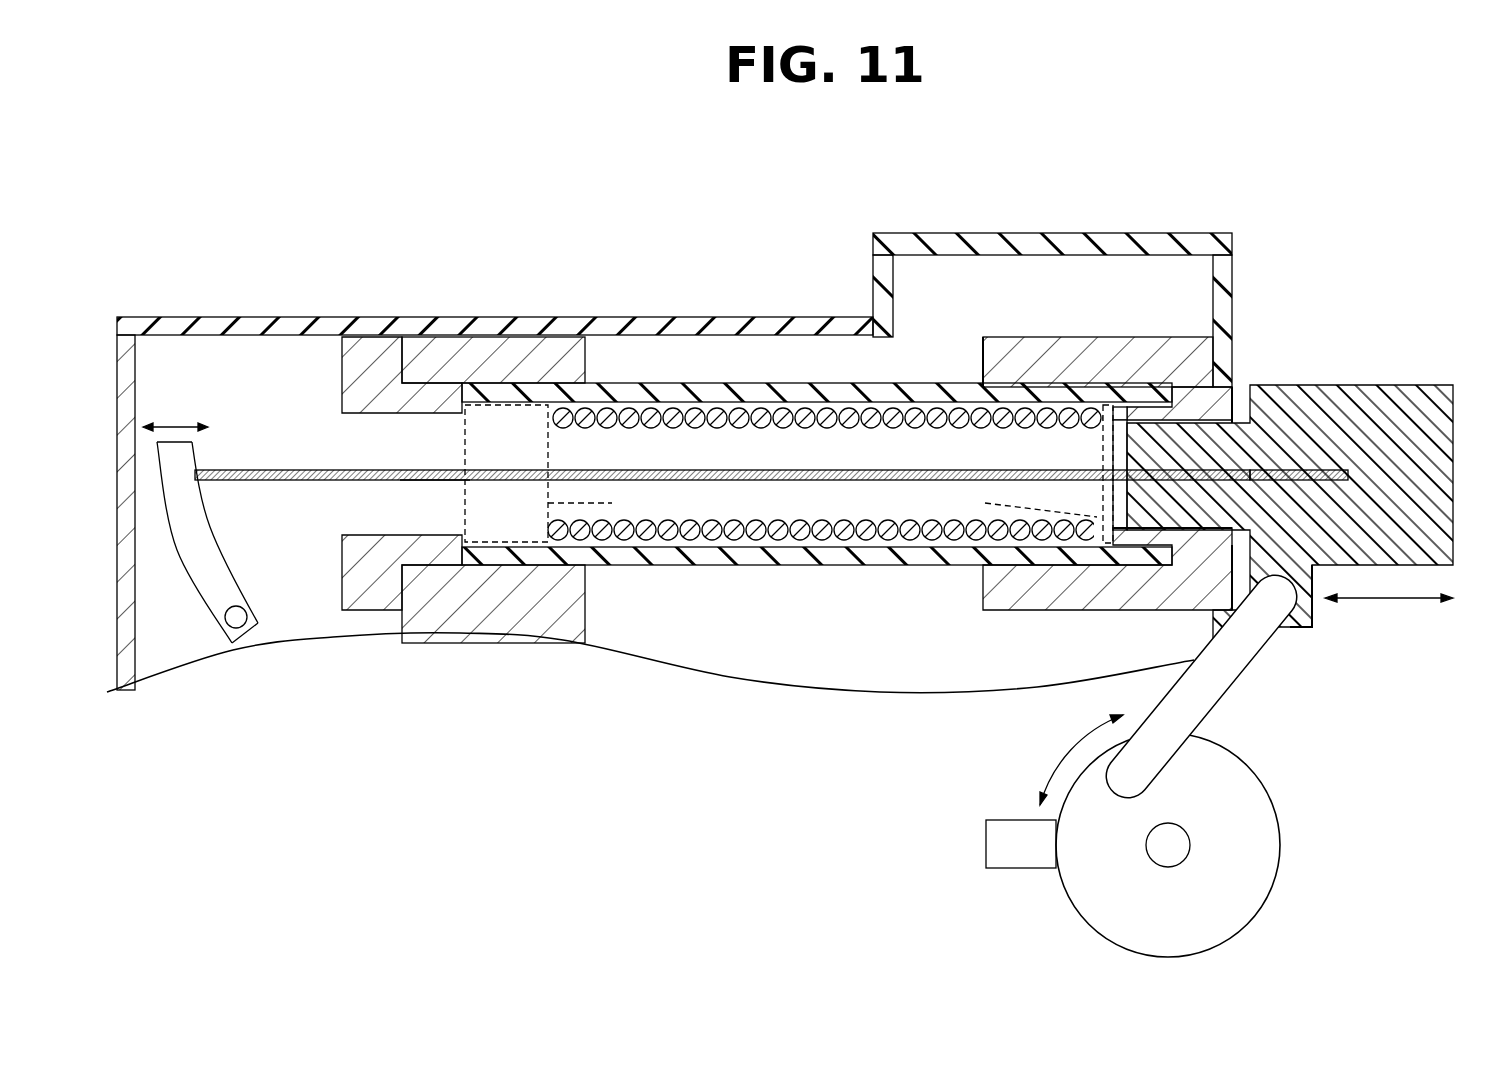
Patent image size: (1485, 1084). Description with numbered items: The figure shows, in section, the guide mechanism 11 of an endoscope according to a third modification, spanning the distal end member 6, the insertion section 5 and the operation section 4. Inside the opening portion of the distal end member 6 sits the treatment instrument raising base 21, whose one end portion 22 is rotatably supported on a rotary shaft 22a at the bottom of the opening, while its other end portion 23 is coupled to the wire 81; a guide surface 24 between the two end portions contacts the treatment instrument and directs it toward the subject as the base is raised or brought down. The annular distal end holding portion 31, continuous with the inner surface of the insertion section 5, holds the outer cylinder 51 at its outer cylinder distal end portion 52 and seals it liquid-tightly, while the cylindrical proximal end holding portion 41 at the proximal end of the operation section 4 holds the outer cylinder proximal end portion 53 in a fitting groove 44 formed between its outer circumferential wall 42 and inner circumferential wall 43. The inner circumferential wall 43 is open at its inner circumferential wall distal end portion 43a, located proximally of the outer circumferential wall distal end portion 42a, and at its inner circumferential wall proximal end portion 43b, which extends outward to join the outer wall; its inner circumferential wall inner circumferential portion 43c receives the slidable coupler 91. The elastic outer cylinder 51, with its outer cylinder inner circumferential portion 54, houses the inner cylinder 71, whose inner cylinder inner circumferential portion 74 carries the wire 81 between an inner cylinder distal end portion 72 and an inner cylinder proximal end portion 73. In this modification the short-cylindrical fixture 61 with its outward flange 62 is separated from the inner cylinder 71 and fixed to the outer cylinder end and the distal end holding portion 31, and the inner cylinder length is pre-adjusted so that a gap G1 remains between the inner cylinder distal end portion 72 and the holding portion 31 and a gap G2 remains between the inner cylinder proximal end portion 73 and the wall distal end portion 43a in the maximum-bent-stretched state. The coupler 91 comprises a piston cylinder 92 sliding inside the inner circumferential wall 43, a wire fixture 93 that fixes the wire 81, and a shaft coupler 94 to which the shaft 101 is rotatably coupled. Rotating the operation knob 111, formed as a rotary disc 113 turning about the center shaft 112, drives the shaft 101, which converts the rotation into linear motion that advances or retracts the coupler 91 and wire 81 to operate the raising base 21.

The operation section 4 is at (1050, 233).
The insertion section 5 is at (683, 317).
The distal end member 6 is at (280, 317).
The guide mechanism 11 is at (295, 625).
The treatment instrument raising base 21 is at (221, 541).
The one end portion 22 is at (245, 604).
The rotary shaft 22a is at (224, 622).
The other end portion 23 is at (197, 470).
The guide surface 24 is at (213, 523).
The distal end holding portion 31 is at (432, 618).
The proximal end holding portion 41 is at (983, 590).
The outer circumferential wall 42 is at (1030, 337).
The outer circumferential wall distal end portion 42a is at (983, 352).
The inner circumferential wall 43 is at (1133, 410).
The inner circumferential wall distal end portion 43a is at (1117, 418).
The inner circumferential wall proximal end portion 43b is at (1235, 413).
The inner circumferential wall inner circumferential portion 43c is at (1118, 455).
The fitting groove 44 is at (1143, 567).
The outer cylinder 51 is at (690, 567).
The outer cylinder distal end portion 52 is at (465, 545).
The outer cylinder proximal end portion 53 is at (1175, 547).
The outer cylinder inner circumferential portion 54 is at (795, 548).
The fixture 61 is at (340, 398).
The outward flange 62 is at (340, 355).
The inner cylinder 71 is at (643, 430).
The inner cylinder distal end portion 72 is at (563, 430).
The inner cylinder proximal end portion 73 is at (1100, 545).
The inner cylinder inner circumferential portion 74 is at (787, 430).
The wire 81 is at (430, 481).
The coupler 91 is at (1290, 488).
The piston cylinder 92 is at (1250, 452).
The wire fixture 93 is at (1340, 470).
The shaft coupler 94 is at (1312, 615).
The shaft 101 is at (1230, 692).
The operation knob 111 is at (986, 838).
The center shaft 112 is at (1167, 845).
The rotary disc 113 is at (1272, 888).
The gap G1 is at (598, 500).
The gap G2 is at (1020, 503).